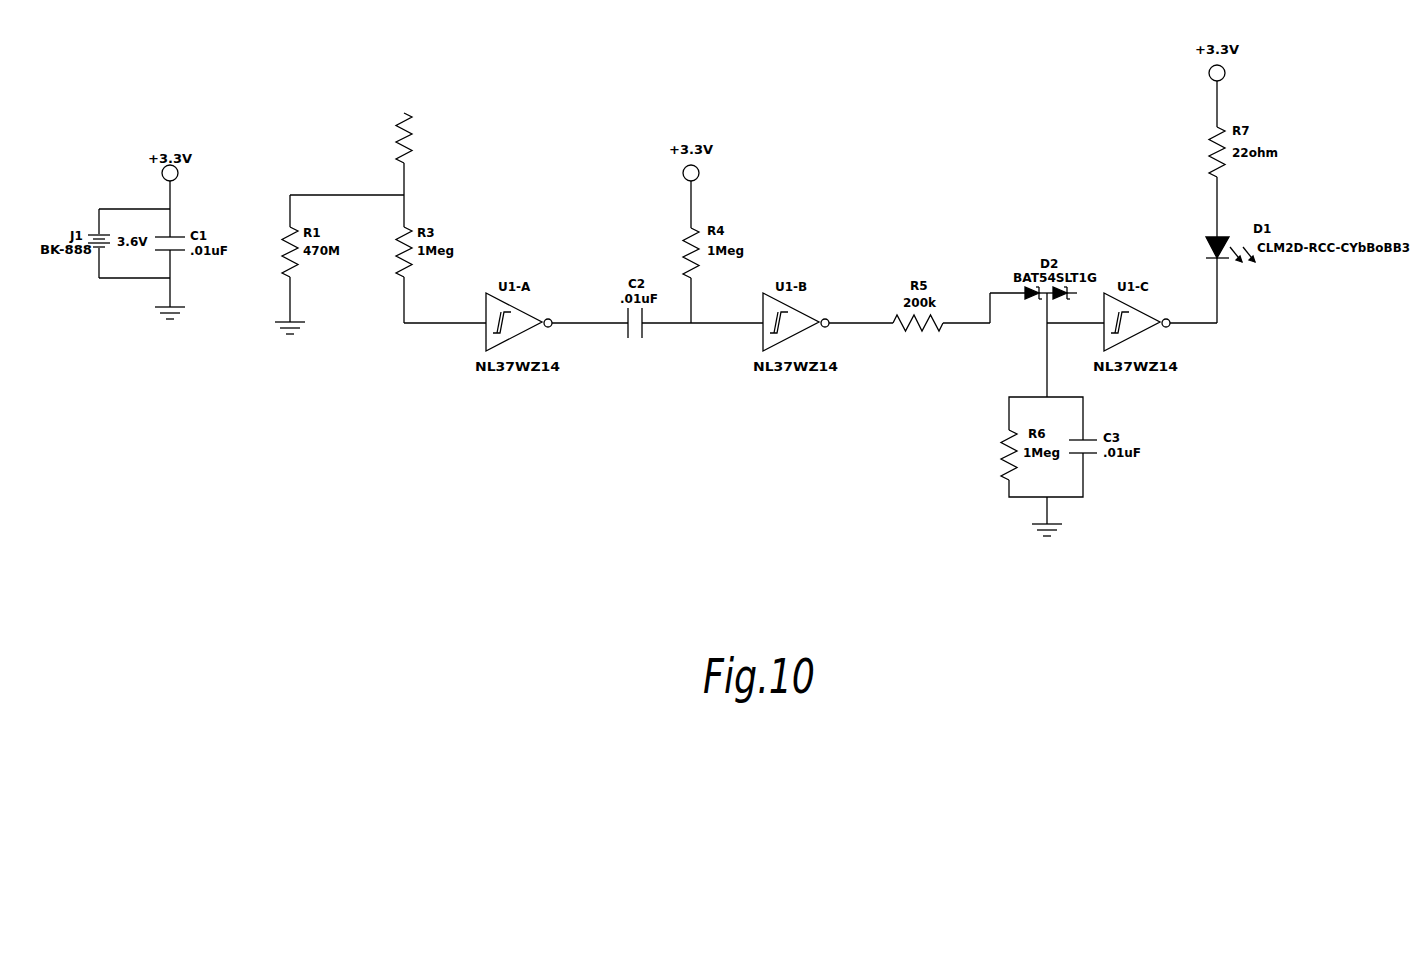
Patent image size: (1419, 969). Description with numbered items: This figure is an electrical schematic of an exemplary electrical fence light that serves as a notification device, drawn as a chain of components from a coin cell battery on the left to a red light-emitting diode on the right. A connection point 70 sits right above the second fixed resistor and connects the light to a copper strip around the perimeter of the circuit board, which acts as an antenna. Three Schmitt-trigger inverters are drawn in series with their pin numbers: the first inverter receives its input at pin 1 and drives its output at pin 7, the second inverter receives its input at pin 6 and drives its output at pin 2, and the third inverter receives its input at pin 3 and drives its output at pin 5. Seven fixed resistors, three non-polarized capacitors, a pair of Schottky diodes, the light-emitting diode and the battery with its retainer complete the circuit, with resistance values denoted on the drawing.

The connection point 70 is at (404, 113).
The U1-A input pin 1 is at (445, 317).
The U1-A output pin 7 is at (586, 318).
The U1-B input pin 6 is at (727, 317).
The U1-B output pin 2 is at (857, 318).
The U1-C input pin 3 is at (1075, 317).
The U1-C output pin 5 is at (1189, 318).